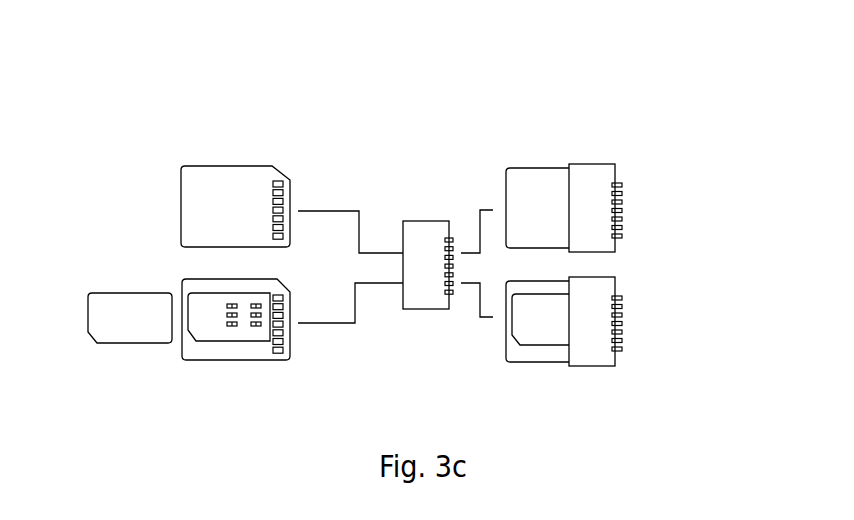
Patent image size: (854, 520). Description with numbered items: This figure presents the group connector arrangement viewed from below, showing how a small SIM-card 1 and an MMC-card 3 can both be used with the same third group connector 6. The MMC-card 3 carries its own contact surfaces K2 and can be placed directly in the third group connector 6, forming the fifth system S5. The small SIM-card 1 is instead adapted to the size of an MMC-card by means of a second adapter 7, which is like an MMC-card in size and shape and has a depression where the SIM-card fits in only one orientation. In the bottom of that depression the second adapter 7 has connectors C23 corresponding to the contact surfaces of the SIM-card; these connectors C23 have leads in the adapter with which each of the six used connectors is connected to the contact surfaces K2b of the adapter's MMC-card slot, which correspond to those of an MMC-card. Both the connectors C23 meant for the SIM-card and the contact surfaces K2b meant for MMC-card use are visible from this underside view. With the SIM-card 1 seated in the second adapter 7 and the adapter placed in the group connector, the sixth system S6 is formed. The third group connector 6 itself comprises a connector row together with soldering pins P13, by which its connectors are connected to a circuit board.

The MMC-card 3 is at (225, 183).
The small SIM-card 1 is at (124, 286).
The second adapter 7 is at (255, 349).
The contact surfaces of the MMC-card K2 is at (281, 178).
The contact surfaces of the adapter's MMC-card slot K2b is at (290, 356).
The connectors C23 is at (256, 327).
The soldering pins P13 is at (447, 238).
The third group connector 6 is at (428, 261).
The fifth system S5 is at (642, 209).
The sixth system S6 is at (642, 326).